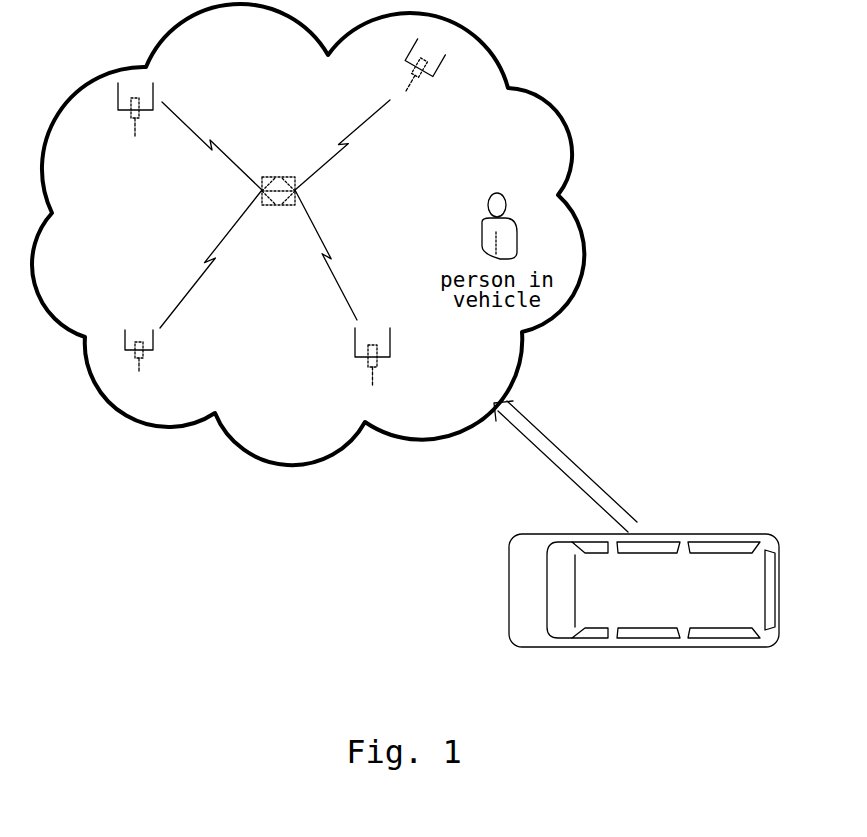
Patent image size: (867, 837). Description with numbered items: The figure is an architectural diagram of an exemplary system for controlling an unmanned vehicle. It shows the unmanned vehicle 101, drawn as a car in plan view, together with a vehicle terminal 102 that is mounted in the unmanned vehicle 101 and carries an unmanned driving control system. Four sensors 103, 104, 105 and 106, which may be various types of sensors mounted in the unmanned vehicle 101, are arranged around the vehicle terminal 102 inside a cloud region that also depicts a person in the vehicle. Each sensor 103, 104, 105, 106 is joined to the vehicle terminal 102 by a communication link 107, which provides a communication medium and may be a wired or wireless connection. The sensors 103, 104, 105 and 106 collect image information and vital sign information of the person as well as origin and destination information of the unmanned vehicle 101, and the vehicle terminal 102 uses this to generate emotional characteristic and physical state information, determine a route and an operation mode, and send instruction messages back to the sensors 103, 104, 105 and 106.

The unmanned vehicle 101 is at (662, 534).
The vehicle terminal 102 is at (280, 205).
The sensor 103 is at (134, 128).
The sensor 104 is at (418, 82).
The sensor 105 is at (372, 372).
The sensor 106 is at (140, 366).
The communication link 107 is at (275, 214).